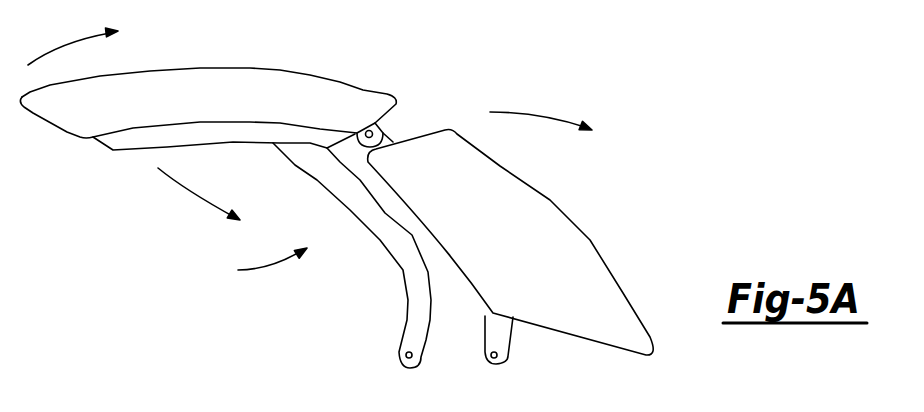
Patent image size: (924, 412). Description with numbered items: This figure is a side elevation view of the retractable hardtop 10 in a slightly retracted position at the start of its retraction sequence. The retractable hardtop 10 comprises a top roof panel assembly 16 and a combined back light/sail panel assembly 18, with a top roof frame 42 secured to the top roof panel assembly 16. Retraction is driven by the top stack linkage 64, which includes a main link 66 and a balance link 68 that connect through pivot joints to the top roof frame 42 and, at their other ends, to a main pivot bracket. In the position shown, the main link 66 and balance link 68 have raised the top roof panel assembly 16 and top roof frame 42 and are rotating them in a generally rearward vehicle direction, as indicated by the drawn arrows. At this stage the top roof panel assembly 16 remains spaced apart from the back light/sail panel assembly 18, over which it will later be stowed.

The retractable hardtop 10 is at (474, 76).
The top roof panel assembly 16 is at (238, 72).
The back light/sail panel assembly 18 is at (583, 243).
The top roof frame 42 is at (238, 143).
The top stack linkage 64 is at (258, 266).
The main link 66 is at (407, 270).
The balance link 68 is at (502, 337).